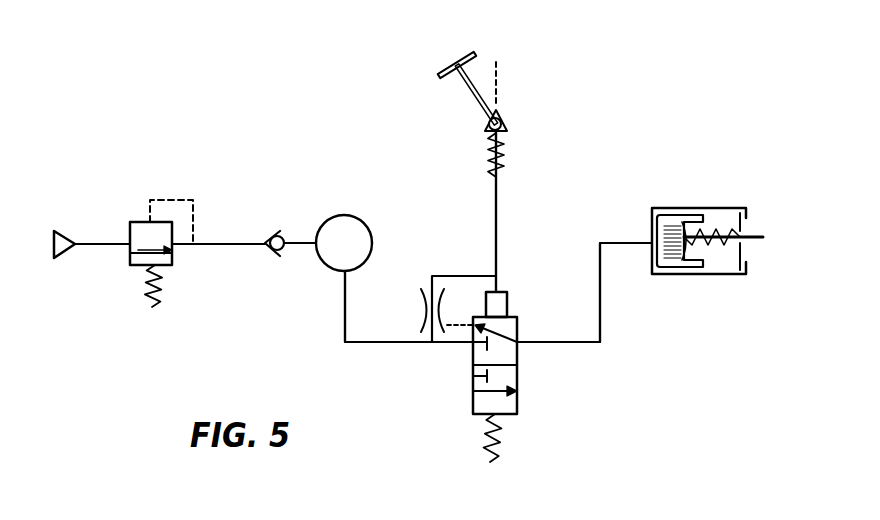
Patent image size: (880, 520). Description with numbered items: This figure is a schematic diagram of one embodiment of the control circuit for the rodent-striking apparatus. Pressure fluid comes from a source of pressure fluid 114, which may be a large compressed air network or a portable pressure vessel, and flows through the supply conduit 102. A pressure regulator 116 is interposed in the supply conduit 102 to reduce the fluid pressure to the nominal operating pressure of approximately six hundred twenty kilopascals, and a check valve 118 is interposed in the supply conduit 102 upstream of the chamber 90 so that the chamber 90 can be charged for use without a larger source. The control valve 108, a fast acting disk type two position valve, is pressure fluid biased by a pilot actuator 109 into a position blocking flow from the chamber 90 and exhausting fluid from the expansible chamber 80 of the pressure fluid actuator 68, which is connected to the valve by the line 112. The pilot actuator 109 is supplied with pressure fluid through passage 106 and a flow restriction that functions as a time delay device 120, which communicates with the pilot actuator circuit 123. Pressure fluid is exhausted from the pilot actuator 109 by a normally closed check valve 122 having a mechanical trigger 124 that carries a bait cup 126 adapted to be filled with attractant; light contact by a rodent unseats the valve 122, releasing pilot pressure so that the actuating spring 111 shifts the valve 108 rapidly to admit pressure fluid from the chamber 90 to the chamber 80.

The pressure fluid actuator 68 is at (770, 168).
The expansible chamber 80 is at (673, 214).
The chamber 90 is at (364, 222).
The supply conduit 102 is at (301, 243).
The passage 106 is at (408, 343).
The control valve 108 is at (517, 375).
The pilot actuator 109 is at (508, 302).
The actuating spring 111 is at (500, 432).
The line 112 is at (600, 308).
The source of pressure fluid 114 is at (65, 232).
The pressure regulator 116 is at (130, 256).
The check valve 118 is at (270, 251).
The time delay device 120 is at (420, 302).
The normally closed check valve 122 is at (502, 124).
The pilot actuator circuit 123 is at (498, 205).
The trigger 124 is at (478, 80).
The bait cup 126 is at (449, 62).